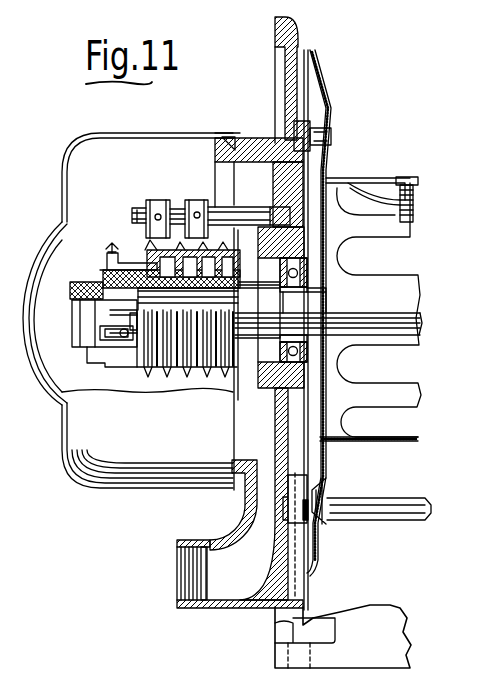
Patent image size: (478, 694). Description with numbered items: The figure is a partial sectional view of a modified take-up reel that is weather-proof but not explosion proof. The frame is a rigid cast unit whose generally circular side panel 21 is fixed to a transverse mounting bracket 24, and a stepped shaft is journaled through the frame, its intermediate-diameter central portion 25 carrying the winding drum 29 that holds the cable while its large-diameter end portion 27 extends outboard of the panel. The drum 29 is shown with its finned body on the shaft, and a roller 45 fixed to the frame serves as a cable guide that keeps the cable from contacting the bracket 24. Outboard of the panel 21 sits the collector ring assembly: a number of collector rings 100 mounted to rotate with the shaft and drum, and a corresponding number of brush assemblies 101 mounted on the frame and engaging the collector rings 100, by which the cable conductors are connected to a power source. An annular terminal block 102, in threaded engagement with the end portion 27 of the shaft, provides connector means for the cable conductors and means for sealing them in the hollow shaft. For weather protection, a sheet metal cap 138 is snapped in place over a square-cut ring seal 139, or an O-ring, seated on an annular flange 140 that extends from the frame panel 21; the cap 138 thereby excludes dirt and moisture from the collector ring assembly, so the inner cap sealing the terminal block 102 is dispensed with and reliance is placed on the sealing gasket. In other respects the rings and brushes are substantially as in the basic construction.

The side panel 21 is at (277, 77).
The transverse mounting bracket 24 is at (333, 657).
The central portion of shaft 25 is at (352, 313).
The end portion of shaft 27 is at (243, 287).
The winding drum 29 is at (338, 180).
The roller 45 is at (384, 505).
The collector ring 100 is at (155, 250).
The brush assembly 101 is at (198, 200).
The terminal block 102 is at (127, 268).
The sheet metal cap 138 is at (92, 492).
The ring seal 139 is at (238, 133).
The annular flange 140 is at (243, 162).